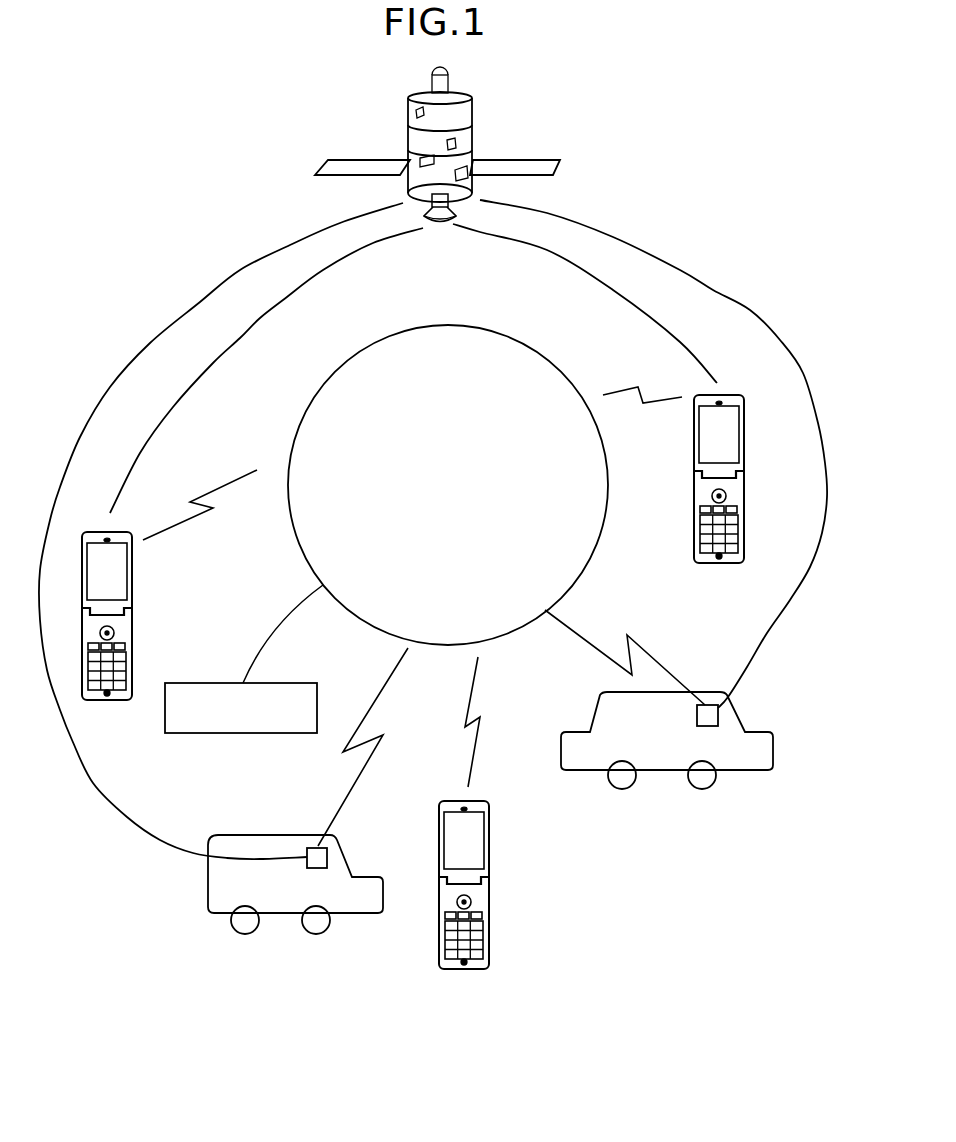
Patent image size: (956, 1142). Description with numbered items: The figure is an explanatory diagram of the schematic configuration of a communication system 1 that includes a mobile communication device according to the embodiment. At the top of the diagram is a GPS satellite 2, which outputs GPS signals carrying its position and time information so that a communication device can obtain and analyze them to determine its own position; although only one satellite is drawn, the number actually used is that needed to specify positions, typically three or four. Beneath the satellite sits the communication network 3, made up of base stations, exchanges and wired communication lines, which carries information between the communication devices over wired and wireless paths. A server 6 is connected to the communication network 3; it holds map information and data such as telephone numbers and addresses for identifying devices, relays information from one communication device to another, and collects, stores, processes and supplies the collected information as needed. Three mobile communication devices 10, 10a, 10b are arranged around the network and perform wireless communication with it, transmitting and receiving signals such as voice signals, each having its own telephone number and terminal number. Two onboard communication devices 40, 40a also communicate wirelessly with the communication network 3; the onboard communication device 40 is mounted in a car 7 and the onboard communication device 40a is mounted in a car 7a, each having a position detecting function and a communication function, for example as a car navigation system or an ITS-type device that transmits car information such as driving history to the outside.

The communication system 1 is at (193, 219).
The GPS satellite 2 is at (408, 112).
The communication network 3 is at (401, 325).
The server 6 is at (243, 735).
The car 7 is at (678, 699).
The car 7a is at (321, 791).
The mobile communication device 10 is at (132, 562).
The mobile communication device 10a is at (490, 832).
The mobile communication device 10b is at (744, 427).
The onboard communication device 40 is at (697, 717).
The onboard communication device 40a is at (328, 860).